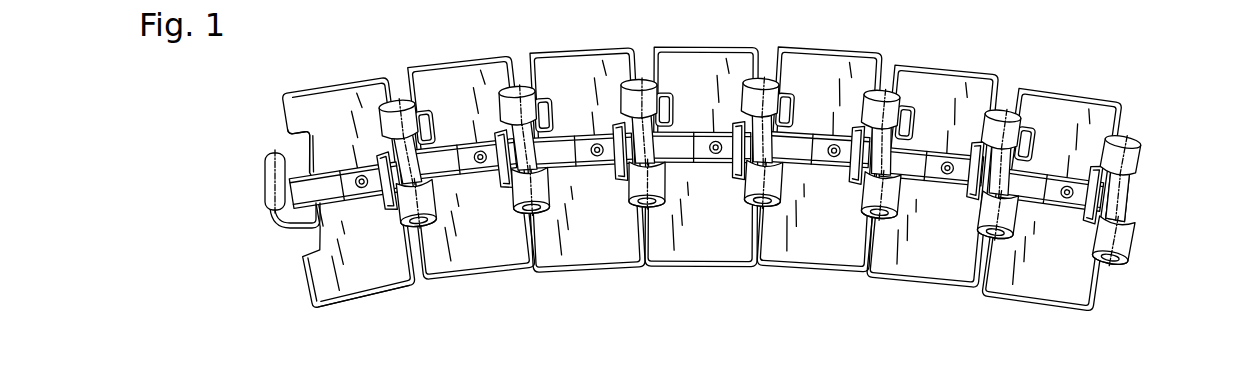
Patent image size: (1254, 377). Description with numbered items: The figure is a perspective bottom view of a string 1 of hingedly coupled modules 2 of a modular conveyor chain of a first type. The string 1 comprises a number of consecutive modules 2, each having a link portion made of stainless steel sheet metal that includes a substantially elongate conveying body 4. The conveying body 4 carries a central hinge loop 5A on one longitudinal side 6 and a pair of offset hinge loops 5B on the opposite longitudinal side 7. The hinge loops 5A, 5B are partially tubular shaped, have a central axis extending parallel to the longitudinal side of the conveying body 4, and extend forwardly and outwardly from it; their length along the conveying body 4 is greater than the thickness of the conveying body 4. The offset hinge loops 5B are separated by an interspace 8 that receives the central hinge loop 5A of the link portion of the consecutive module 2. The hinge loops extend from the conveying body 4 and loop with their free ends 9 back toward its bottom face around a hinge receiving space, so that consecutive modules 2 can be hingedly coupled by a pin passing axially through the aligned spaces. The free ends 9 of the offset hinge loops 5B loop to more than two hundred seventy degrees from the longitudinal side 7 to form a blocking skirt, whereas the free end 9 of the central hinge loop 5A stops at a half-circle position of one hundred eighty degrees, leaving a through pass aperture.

The string 1 is at (258, 260).
The module 2 is at (336, 76).
The conveying body 4 is at (337, 287).
The central hinge loop 5A is at (265, 166).
The offset hinge loops 5B is at (397, 108).
The longitudinal side 6 is at (302, 282).
The opposite longitudinal side 7 is at (393, 100).
The interspace 8 is at (1155, 212).
The free ends 9 is at (283, 152).